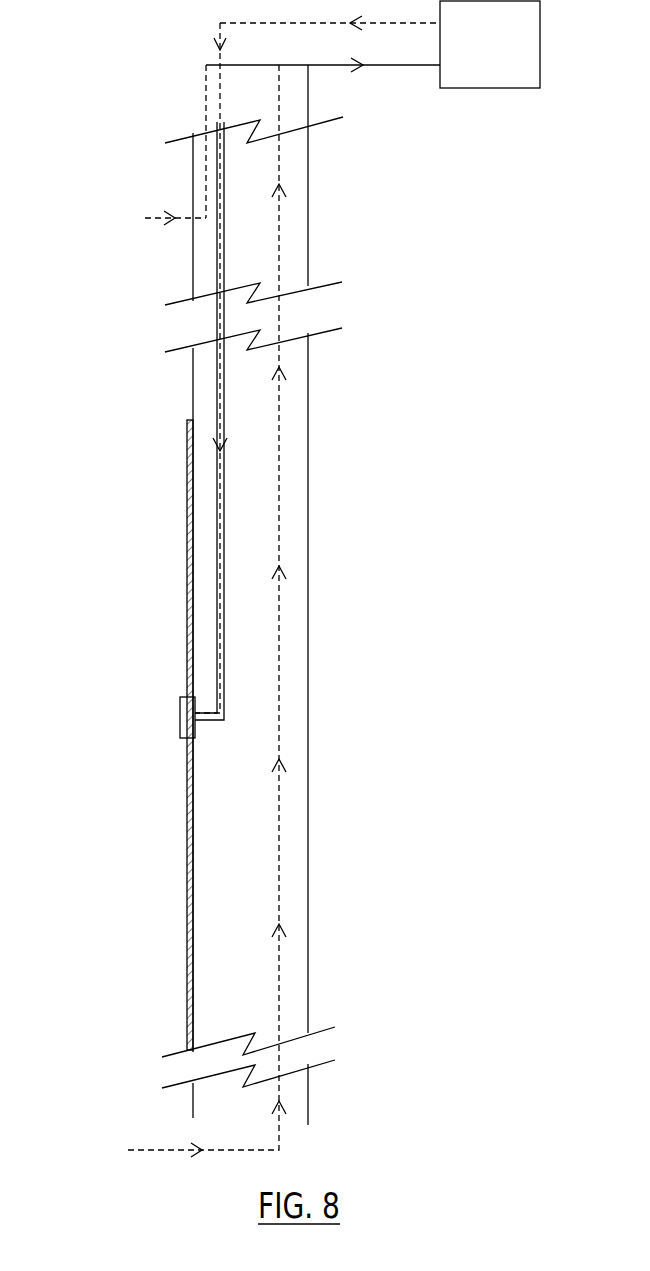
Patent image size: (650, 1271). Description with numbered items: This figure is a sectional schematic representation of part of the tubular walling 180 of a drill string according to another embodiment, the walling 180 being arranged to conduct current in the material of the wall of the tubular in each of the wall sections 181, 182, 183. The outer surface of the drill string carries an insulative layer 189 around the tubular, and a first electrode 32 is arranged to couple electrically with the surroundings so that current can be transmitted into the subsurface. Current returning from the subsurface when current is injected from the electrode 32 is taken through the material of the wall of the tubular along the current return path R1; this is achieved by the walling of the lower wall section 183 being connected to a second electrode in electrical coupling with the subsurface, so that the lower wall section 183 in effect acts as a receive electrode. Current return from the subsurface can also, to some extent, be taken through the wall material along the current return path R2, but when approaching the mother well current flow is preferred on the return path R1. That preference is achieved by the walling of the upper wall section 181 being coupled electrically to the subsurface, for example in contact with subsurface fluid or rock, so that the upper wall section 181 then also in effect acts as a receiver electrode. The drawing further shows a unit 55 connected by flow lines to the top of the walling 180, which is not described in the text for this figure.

The controller / refrigeration unit 55 is at (373, 44).
The walling 180 is at (518, 250).
The upper wall section 181 is at (293, 213).
The wall section 182 is at (308, 606).
The lower wall section 183 is at (310, 1113).
The insulative layer 189 is at (187, 470).
The first electrode 32 is at (180, 718).
The current return path R1 is at (279, 718).
The current return path R2 is at (207, 167).